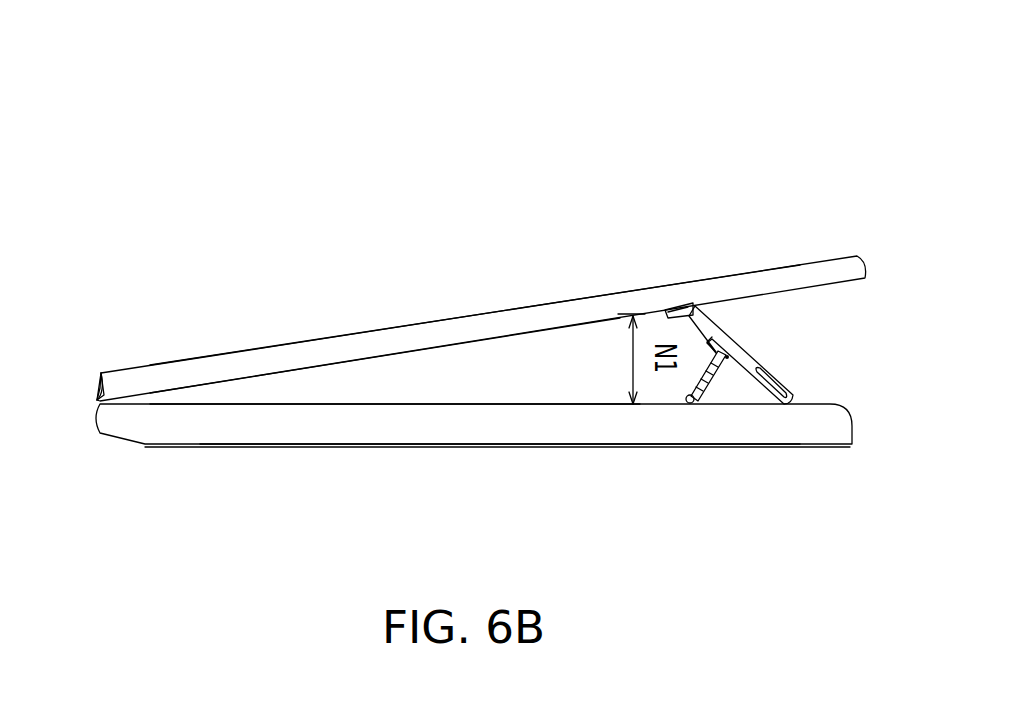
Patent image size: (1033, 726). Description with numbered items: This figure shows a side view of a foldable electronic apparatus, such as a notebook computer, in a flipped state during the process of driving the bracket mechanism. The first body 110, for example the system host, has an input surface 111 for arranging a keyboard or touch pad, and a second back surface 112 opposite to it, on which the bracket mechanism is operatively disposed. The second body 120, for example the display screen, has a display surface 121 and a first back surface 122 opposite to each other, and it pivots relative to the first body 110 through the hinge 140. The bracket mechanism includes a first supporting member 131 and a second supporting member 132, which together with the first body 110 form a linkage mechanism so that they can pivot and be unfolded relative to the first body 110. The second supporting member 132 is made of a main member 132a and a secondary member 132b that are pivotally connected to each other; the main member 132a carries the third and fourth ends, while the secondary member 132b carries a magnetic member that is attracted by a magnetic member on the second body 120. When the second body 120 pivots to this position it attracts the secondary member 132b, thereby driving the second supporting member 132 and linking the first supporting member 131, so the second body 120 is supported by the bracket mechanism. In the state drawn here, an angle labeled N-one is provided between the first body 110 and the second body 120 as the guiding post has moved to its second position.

The first body 110 is at (748, 432).
The input surface 111 is at (490, 446).
The second back surface 112 is at (392, 397).
The second body 120 is at (840, 268).
The display surface 121 is at (493, 315).
The first back surface 122 is at (387, 353).
The first supporting member 131 is at (688, 403).
The second supporting member 132 is at (132, 10).
The main member 132a is at (742, 344).
The secondary member 132b is at (667, 314).
The hinge 140 is at (96, 400).